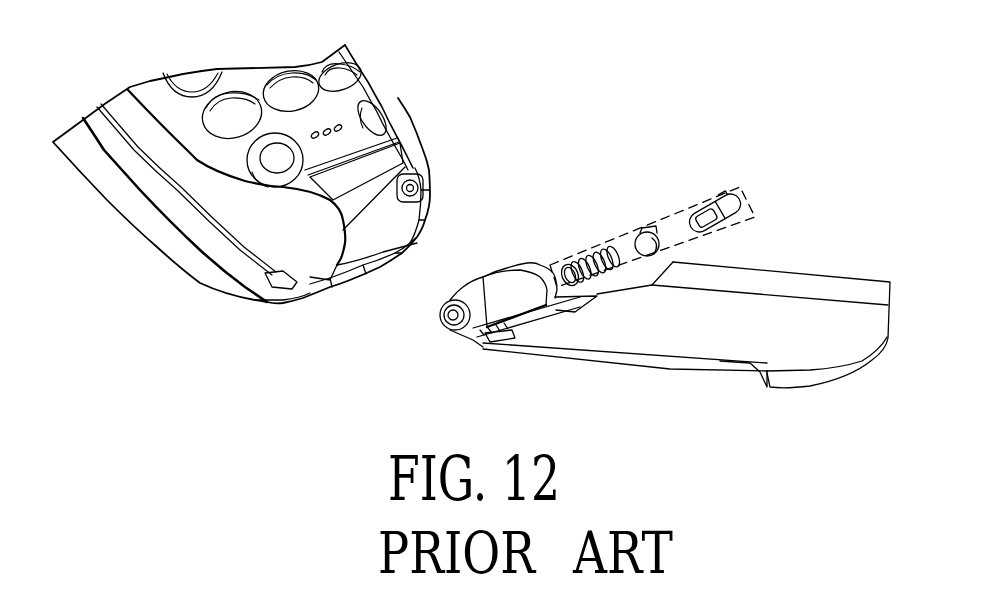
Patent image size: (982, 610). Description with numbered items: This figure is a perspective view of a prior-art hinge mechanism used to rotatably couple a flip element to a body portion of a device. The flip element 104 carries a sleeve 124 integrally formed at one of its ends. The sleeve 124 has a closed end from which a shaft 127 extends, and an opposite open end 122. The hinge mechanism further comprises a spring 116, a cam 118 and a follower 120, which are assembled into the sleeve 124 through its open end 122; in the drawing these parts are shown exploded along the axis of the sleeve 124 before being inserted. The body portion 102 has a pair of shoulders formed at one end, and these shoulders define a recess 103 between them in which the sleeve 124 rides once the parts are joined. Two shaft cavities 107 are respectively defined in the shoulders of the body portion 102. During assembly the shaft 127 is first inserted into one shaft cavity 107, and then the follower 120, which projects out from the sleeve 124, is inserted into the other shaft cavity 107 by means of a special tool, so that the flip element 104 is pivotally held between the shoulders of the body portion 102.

The body portion 102 is at (397, 91).
The recess 103 is at (401, 229).
The flip element 104 is at (556, 366).
The shaft cavity 107 is at (418, 189).
The spring 116 is at (595, 256).
The cam 118 is at (653, 228).
The follower 120 is at (737, 233).
The open end 122 is at (548, 259).
The sleeve 124 is at (461, 282).
The shaft 127 is at (442, 316).